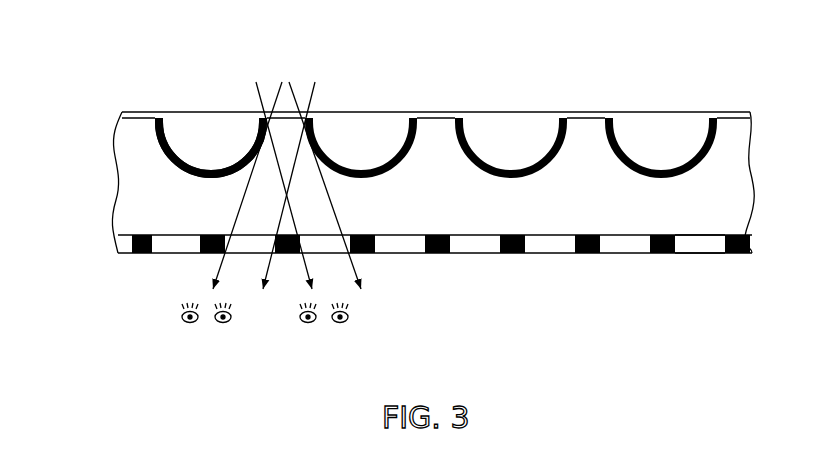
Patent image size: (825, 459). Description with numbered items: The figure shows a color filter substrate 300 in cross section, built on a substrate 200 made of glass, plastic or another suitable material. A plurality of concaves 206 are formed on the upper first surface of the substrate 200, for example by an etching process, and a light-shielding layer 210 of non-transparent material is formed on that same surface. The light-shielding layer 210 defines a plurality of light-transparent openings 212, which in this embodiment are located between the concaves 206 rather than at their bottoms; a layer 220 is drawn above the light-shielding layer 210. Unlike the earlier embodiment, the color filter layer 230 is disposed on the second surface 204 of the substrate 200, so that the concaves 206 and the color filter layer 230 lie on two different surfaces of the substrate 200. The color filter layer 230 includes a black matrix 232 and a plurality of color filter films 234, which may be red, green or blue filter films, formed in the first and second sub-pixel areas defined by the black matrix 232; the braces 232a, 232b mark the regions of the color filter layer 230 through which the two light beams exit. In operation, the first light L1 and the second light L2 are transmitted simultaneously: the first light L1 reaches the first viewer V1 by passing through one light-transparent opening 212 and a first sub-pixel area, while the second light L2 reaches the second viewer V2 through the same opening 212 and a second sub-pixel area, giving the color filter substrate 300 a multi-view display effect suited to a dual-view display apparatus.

The substrate 200 is at (740, 187).
The top cover layer 220 is at (752, 113).
The light-transparent openings 212 is at (434, 115).
The light-shielding layer 210 is at (712, 147).
The concaves 206 is at (213, 143).
The second surface 204 is at (550, 239).
The black matrix 232 is at (732, 242).
The color filter films 234 is at (693, 242).
The color filter layer 230 is at (767, 297).
The first barrier region 232a is at (273, 262).
The second barrier region 232b is at (298, 262).
The first light L1 is at (267, 263).
The second light L2 is at (352, 260).
The first viewer V1 is at (206, 325).
The second viewer V2 is at (324, 325).
The color filter substrate 300 is at (767, 376).